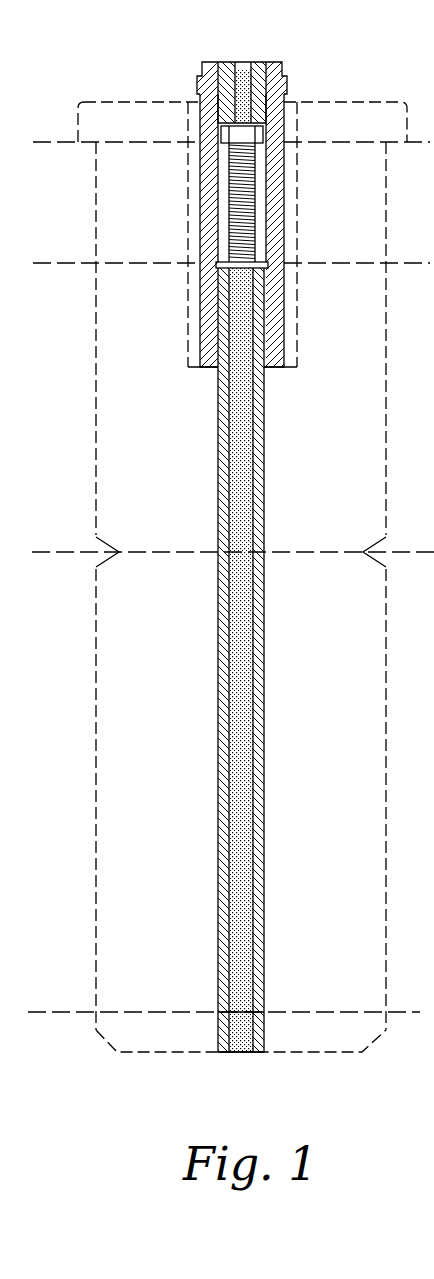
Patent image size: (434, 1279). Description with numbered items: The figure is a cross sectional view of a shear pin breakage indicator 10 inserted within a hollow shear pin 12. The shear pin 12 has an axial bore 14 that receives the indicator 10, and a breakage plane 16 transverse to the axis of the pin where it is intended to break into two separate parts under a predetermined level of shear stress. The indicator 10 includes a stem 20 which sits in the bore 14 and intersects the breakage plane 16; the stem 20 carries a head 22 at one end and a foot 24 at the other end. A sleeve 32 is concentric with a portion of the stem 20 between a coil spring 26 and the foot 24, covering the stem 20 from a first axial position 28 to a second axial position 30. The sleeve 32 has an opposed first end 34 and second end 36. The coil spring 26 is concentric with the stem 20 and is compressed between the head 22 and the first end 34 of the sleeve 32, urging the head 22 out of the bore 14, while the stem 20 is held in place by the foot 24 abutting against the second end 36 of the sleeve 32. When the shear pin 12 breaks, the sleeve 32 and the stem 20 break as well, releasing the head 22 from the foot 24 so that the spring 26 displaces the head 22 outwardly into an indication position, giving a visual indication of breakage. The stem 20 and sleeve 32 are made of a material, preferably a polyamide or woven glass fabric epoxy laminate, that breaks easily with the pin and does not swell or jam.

The shear pin breakage indicator 10 is at (166, 447).
The shear pin 12 is at (155, 757).
The axial bore 14 is at (217, 813).
The breakage plane 16 is at (75, 555).
The stem 20 is at (247, 455).
The head 22 is at (240, 62).
The foot 24 is at (260, 1038).
The coil spring 26 is at (250, 198).
The first axial position 28 is at (127, 262).
The second axial position 30 is at (70, 1012).
The sleeve 32 is at (263, 622).
The first end 34 is at (257, 290).
The second end 36 is at (258, 1000).